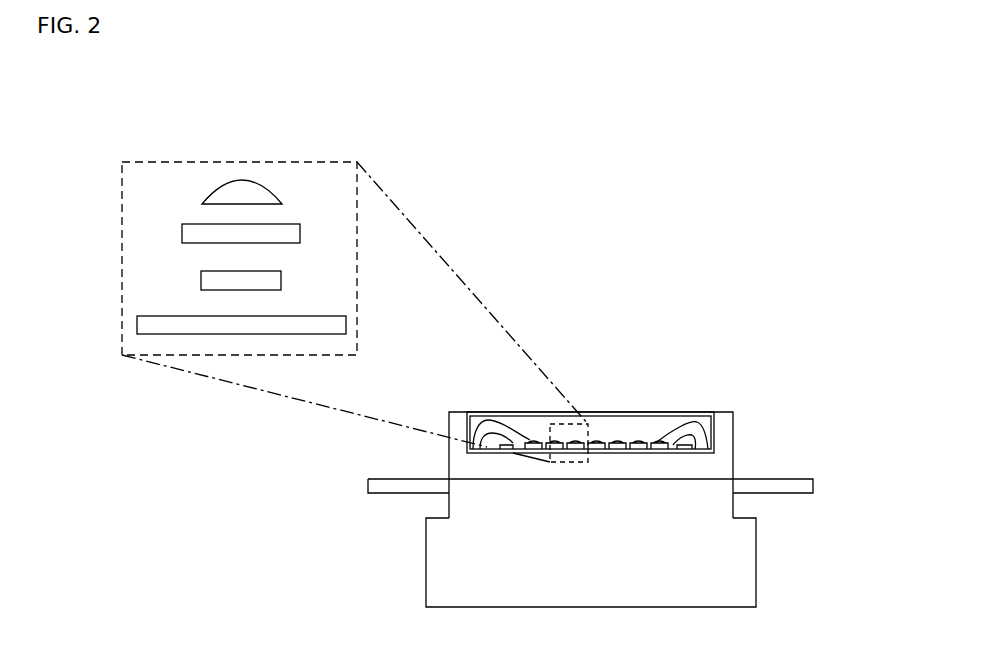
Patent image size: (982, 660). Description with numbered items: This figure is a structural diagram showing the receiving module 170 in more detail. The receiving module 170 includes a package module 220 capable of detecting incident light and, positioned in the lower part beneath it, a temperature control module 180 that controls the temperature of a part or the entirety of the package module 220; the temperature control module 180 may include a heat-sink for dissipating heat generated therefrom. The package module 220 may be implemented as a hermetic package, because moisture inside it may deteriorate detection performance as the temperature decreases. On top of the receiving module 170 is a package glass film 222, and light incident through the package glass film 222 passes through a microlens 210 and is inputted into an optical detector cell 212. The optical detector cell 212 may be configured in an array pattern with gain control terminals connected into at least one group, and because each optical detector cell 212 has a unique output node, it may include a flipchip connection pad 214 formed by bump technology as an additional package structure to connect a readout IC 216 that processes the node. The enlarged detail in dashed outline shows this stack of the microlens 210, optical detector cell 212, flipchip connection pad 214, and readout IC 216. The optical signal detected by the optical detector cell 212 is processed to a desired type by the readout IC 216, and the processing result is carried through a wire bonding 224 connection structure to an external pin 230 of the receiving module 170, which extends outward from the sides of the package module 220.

The receiving module 170 is at (449, 454).
The temperature control module 180 is at (756, 558).
The microlens 210 is at (233, 193).
The optical detector cell 212 is at (197, 235).
The flipchip connection pad 214 is at (207, 280).
The readout IC 216 is at (150, 325).
The package module 220 is at (740, 443).
The package glass film 222 is at (616, 402).
The wire bonding 224 is at (699, 427).
The external pin 230 is at (813, 482).